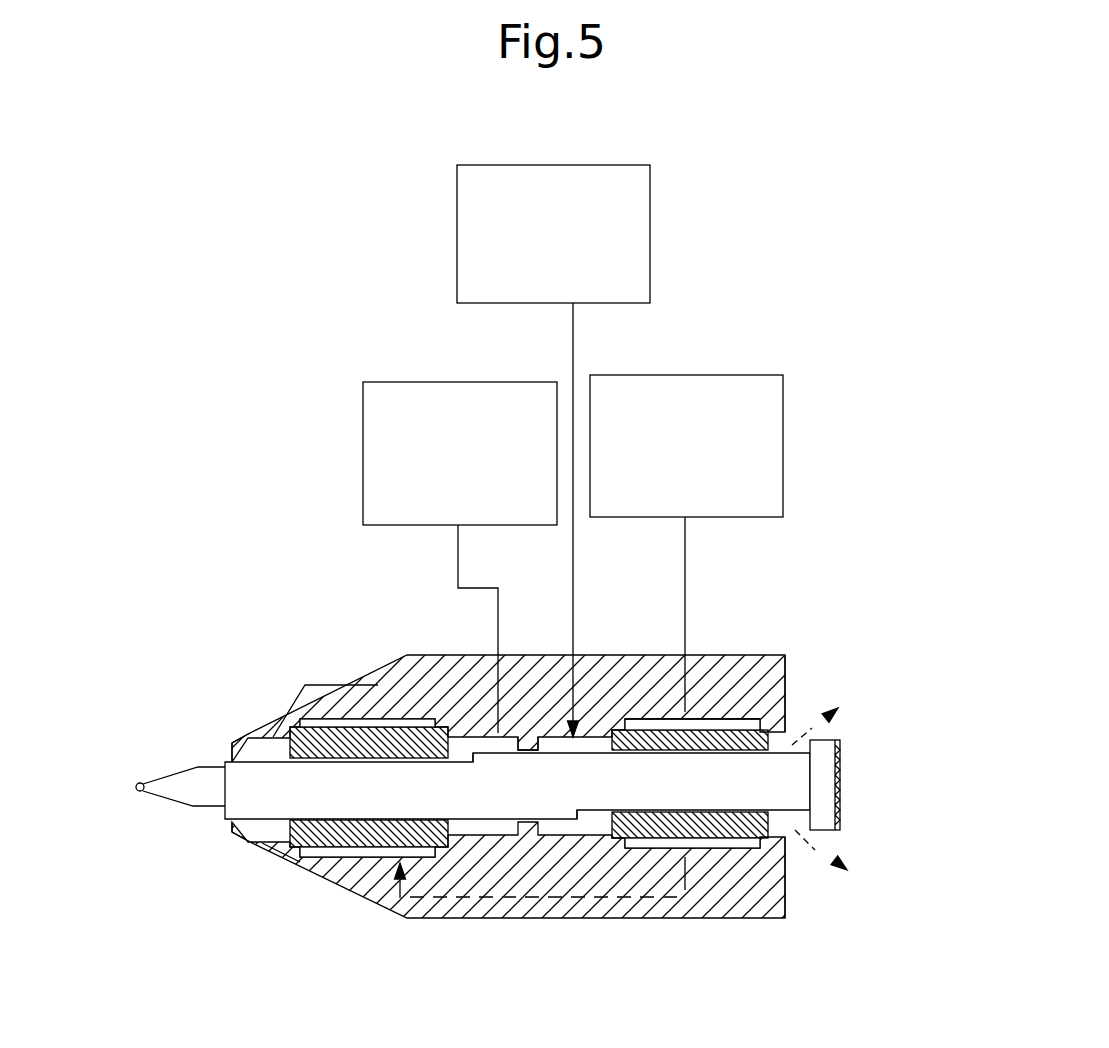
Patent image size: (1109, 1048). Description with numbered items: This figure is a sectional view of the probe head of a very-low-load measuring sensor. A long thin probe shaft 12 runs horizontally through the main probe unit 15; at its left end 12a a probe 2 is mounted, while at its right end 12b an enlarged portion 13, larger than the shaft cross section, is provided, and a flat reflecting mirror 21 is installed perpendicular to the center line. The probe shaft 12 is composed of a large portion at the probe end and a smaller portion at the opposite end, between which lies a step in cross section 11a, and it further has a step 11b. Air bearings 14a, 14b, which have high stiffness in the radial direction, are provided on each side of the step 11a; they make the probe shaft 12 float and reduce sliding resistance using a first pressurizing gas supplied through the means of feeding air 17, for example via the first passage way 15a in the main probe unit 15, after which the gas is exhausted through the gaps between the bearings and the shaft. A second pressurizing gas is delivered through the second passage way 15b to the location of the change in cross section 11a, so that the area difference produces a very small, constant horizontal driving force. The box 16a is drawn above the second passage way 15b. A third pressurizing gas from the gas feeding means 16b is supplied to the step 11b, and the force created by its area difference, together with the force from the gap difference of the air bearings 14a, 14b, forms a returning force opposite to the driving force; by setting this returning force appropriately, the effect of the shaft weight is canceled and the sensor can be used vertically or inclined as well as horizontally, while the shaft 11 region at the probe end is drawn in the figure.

The probe 2 is at (197, 792).
The shaft 11 is at (402, 797).
The step in cross section 11a is at (582, 817).
The step 11b is at (465, 752).
The probe shaft 12 is at (275, 755).
The end of the probe shaft 12a is at (225, 762).
The end of the probe shaft 12b is at (790, 790).
The enlarged portion 13 is at (820, 758).
The air bearing 14a is at (338, 843).
The air bearing 14b is at (723, 830).
The main probe unit 15 is at (378, 687).
The first passage way 15a is at (685, 712).
The second passage way 15b is at (498, 733).
The control unit 16a is at (585, 258).
The gas feeding means 16b is at (492, 477).
The means of feeding air 17 is at (705, 468).
The reflecting mirror 21 is at (842, 808).